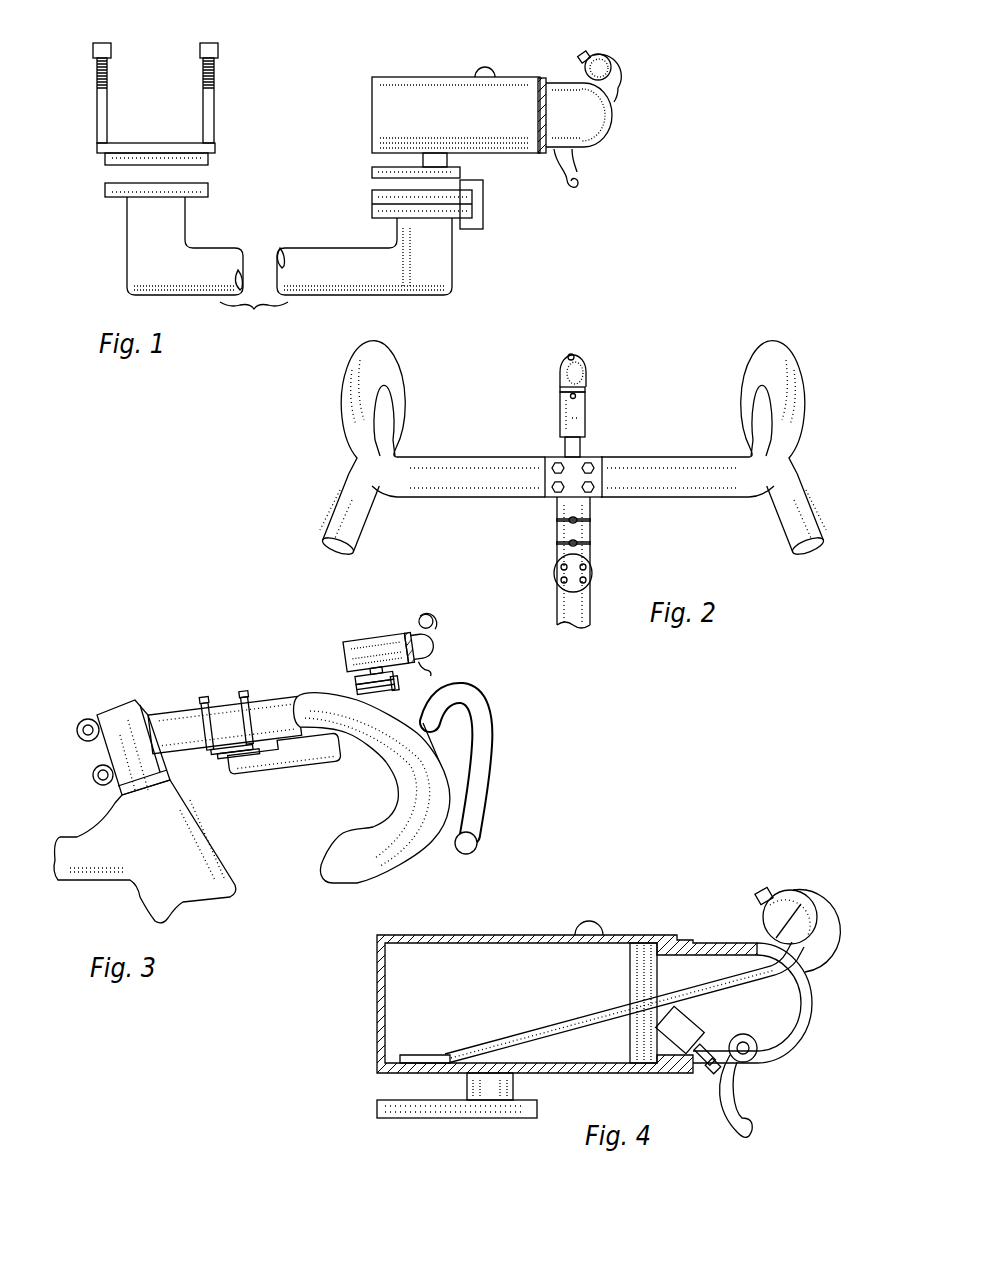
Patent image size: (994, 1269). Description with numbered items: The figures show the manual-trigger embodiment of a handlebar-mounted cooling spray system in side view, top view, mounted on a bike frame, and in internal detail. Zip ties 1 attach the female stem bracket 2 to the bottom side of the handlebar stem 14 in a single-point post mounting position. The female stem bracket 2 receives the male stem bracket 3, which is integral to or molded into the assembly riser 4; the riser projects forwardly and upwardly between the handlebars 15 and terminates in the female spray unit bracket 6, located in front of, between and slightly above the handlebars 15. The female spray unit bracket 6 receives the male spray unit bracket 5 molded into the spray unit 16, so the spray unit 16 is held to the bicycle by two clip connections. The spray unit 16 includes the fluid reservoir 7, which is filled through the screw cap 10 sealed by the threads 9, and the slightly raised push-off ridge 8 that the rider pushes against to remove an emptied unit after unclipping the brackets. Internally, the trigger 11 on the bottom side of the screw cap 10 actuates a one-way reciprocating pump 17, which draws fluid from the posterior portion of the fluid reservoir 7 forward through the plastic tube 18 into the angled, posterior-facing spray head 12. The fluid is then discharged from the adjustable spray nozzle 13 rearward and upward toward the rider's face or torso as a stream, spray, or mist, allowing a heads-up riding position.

In FIG. 1, the zip ties 1 is at (93, 52).
In FIG. 2, the zip ties 1 is at (586, 546).
In FIG. 3, the zip ties 1 is at (247, 699).
In FIG. 1, the female stem bracket 2 is at (202, 160).
In FIG. 3, the female stem bracket 2 is at (212, 752).
In FIG. 1, the male stem bracket 3 is at (105, 190).
In FIG. 3, the male stem bracket 3 is at (222, 764).
In FIG. 1, the assembly riser 4 is at (314, 257).
In FIG. 2, the assembly riser 4 is at (564, 447).
In FIG. 3, the assembly riser 4 is at (268, 766).
In FIG. 1, the male spray unit bracket 5 is at (372, 172).
In FIG. 3, the male spray unit bracket 5 is at (344, 678).
In FIG. 4, the male spray unit bracket 5 is at (420, 1118).
In FIG. 1, the female spray unit bracket 6 is at (482, 212).
In FIG. 3, the female spray unit bracket 6 is at (387, 683).
In FIG. 1, the fluid reservoir 7 is at (414, 81).
In FIG. 2, the fluid reservoir 7 is at (585, 418).
In FIG. 4, the fluid reservoir 7 is at (445, 933).
In FIG. 1, the push-off ridge 8 is at (481, 72).
In FIG. 2, the push-off ridge 8 is at (578, 396).
In FIG. 1, the threads 9 is at (538, 74).
In FIG. 2, the threads 9 is at (560, 390).
In FIG. 4, the threads 9 is at (664, 945).
In FIG. 1, the screw cap 10 is at (606, 126).
In FIG. 4, the screw cap 10 is at (799, 1048).
In FIG. 1, the trigger 11 is at (576, 188).
In FIG. 4, the trigger 11 is at (741, 1104).
In FIG. 1, the spray head 12 is at (608, 62).
In FIG. 2, the spray head 12 is at (584, 365).
In FIG. 4, the spray head 12 is at (798, 894).
In FIG. 1, the adjustable spray nozzle 13 is at (584, 55).
In FIG. 2, the adjustable spray nozzle 13 is at (570, 360).
In FIG. 4, the adjustable spray nozzle 13 is at (758, 891).
In FIG. 2, the handlebar stem 14 is at (557, 556).
In FIG. 3, the handlebar stem 14 is at (271, 704).
In FIG. 2, the handlebars 15 is at (426, 457).
In FIG. 3, the handlebars 15 is at (394, 864).
In FIG. 1, the spray unit 16 is at (352, 62).
In FIG. 2, the spray unit 16 is at (592, 331).
In FIG. 3, the spray unit 16 is at (360, 624).
In FIG. 4, the spray unit 16 is at (571, 899).
In FIG. 4, the one-way reciprocating pump 17 is at (689, 1023).
In FIG. 4, the plastic tube 18 is at (558, 1025).